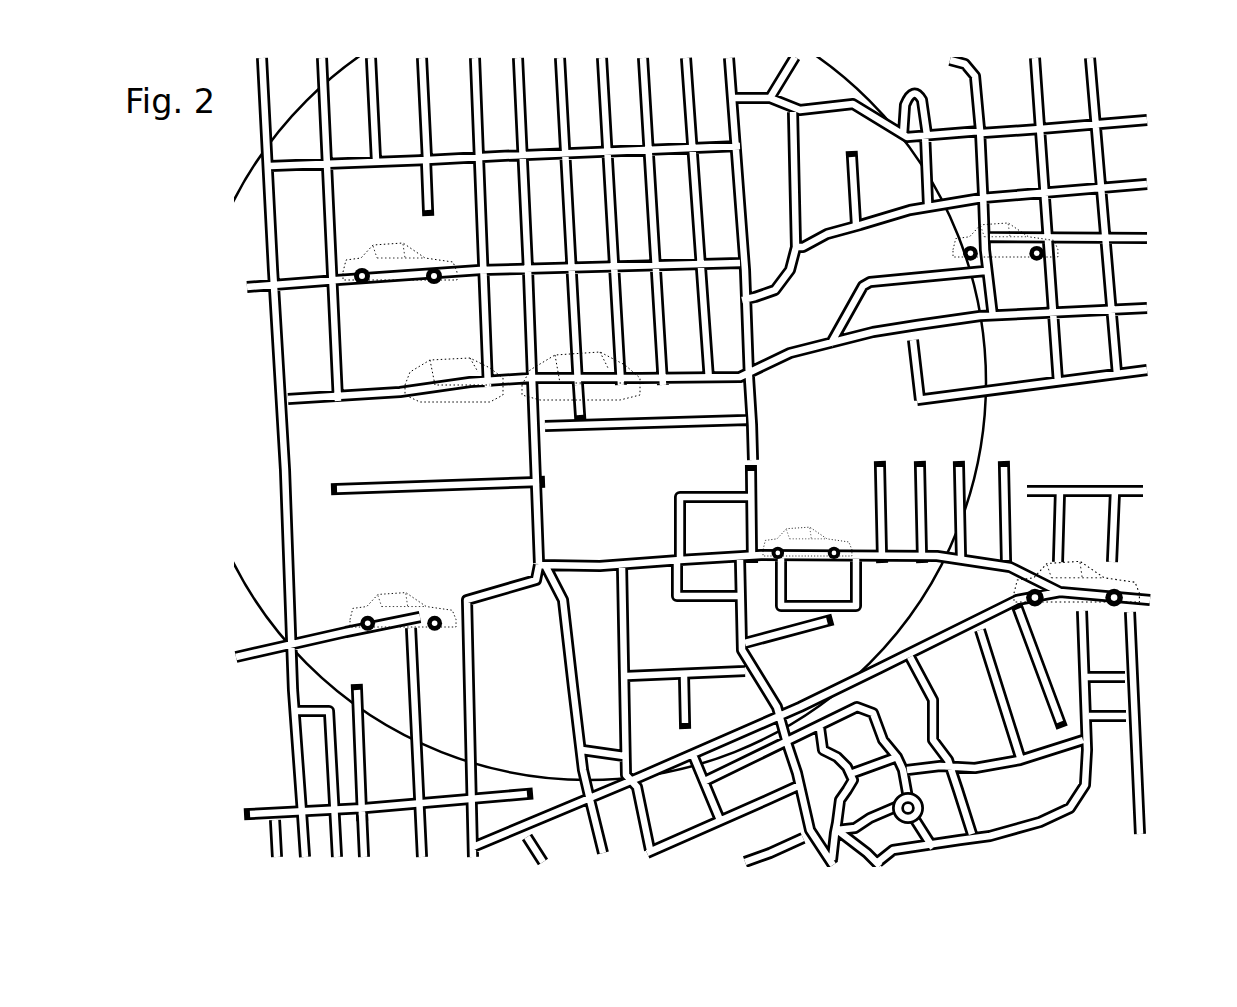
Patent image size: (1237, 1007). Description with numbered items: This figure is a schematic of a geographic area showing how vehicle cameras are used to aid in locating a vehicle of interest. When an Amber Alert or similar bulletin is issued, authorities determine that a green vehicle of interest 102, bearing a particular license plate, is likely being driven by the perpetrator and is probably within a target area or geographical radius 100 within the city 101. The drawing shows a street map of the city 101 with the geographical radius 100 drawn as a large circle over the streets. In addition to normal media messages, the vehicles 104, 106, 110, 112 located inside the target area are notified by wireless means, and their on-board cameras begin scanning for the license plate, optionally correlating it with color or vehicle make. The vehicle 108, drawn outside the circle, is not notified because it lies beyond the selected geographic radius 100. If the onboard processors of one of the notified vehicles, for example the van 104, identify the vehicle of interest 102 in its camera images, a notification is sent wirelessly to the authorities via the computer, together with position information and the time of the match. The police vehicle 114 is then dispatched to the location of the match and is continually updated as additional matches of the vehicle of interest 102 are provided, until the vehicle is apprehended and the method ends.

The geographical radius 100 is at (984, 422).
The city 101 is at (194, 164).
The vehicle of interest 102 is at (568, 397).
The van 104 is at (422, 392).
The vehicle 106 is at (415, 254).
The vehicle 108 is at (1033, 237).
The vehicle 110 is at (369, 593).
The vehicle 112 is at (813, 523).
The police vehicle 114 is at (1117, 578).